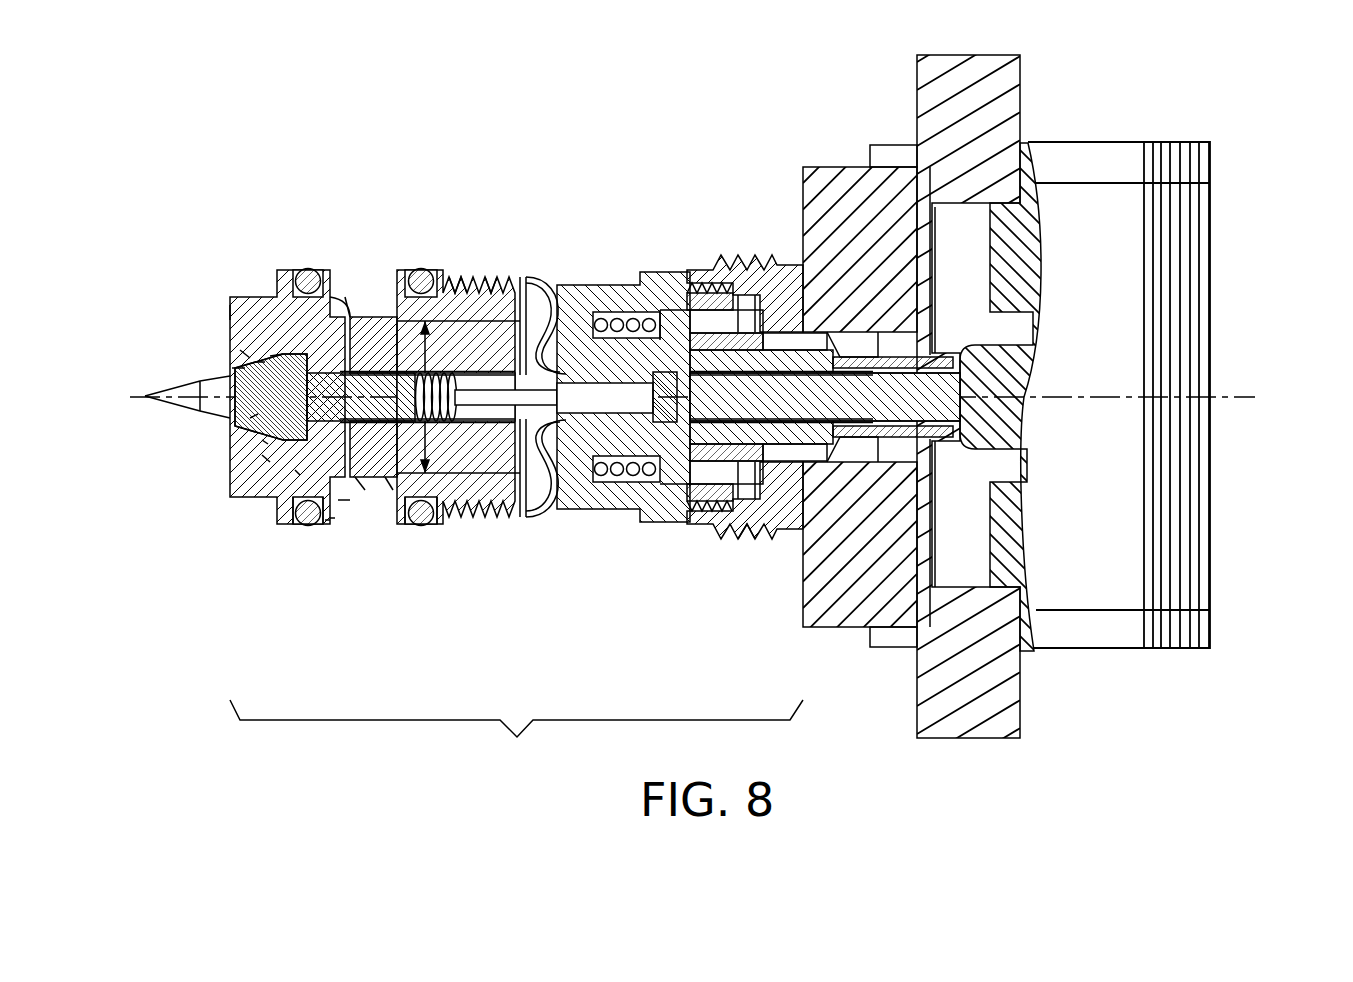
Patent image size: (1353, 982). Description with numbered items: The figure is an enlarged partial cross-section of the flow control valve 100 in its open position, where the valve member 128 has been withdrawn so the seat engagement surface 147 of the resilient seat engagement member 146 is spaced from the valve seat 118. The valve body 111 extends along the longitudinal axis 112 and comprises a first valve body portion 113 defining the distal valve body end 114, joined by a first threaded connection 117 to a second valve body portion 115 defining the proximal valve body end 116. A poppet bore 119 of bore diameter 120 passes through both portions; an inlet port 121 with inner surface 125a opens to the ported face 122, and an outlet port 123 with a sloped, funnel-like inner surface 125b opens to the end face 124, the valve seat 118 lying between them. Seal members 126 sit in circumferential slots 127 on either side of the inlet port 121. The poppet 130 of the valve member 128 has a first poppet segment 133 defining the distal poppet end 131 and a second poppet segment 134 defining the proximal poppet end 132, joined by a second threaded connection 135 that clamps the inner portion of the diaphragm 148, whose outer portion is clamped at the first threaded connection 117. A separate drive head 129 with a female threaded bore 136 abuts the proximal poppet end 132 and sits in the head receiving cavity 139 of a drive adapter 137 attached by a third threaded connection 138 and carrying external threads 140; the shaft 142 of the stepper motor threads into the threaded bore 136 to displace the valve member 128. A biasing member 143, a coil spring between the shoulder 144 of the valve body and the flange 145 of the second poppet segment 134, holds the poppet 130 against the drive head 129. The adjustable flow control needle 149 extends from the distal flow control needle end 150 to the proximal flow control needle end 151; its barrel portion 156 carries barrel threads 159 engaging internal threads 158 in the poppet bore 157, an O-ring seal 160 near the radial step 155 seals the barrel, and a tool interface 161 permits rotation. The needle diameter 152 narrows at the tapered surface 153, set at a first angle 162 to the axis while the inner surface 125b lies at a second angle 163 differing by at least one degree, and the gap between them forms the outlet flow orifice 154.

The flow control valve 100 is at (352, 118).
The valve body 111 is at (516, 732).
The longitudinal axis 112 is at (1237, 390).
The first valve body portion 113 is at (480, 290).
The distal valve body end 114 is at (226, 304).
The second valve body portion 115 is at (630, 300).
The proximal valve body end 116 is at (775, 272).
The first threaded connection 117 is at (493, 256).
The valve seat 118 is at (297, 472).
The poppet bore 119 is at (443, 495).
The bore diameter 120 is at (470, 440).
The inlet port 121 is at (330, 280).
The ported face 122 is at (345, 297).
The outlet port 123 is at (230, 367).
The end face 124 is at (300, 522).
The inner surface 125a is at (388, 490).
The inner surface 125b is at (265, 440).
The seal member 126 is at (308, 526).
The circumferential slot 127 is at (296, 522).
The valve member 128 is at (565, 290).
The drive head 129 is at (797, 335).
The poppet 130 is at (360, 490).
The distal poppet end 131 is at (378, 318).
The proximal poppet end 132 is at (718, 300).
The first poppet segment 133 is at (513, 300).
The second poppet segment 134 is at (648, 290).
The second threaded connection 135 is at (478, 510).
The threaded bore 136 is at (765, 505).
The drive adapter 137 is at (802, 618).
The third threaded connection 138 is at (700, 537).
The head receiving cavity 139 is at (722, 512).
The external threads 140 is at (740, 256).
The shaft 142 is at (863, 595).
The biasing member 143 is at (598, 482).
The shoulder 144 is at (582, 512).
The flange 145 is at (683, 510).
The seat engagement member 146 is at (396, 372).
The seat engagement surface 147 is at (265, 297).
The diaphragm 148 is at (557, 512).
The flow control needle 149 is at (245, 355).
The distal flow control needle end 150 is at (255, 416).
The proximal flow control needle end 151 is at (349, 502).
The needle diameter 152 is at (275, 352).
The tapered surface 153 is at (260, 458).
The outlet flow orifice 154 is at (265, 362).
The radial step 155 is at (325, 522).
The barrel portion 156 is at (332, 520).
The poppet bore 157 is at (446, 252).
The internal threads 158 is at (470, 290).
The barrel threads 159 is at (341, 502).
The O-ring seal 160 is at (281, 340).
The tool interface 161 is at (236, 310).
The first angle 162 is at (235, 368).
The second angle 163 is at (230, 410).